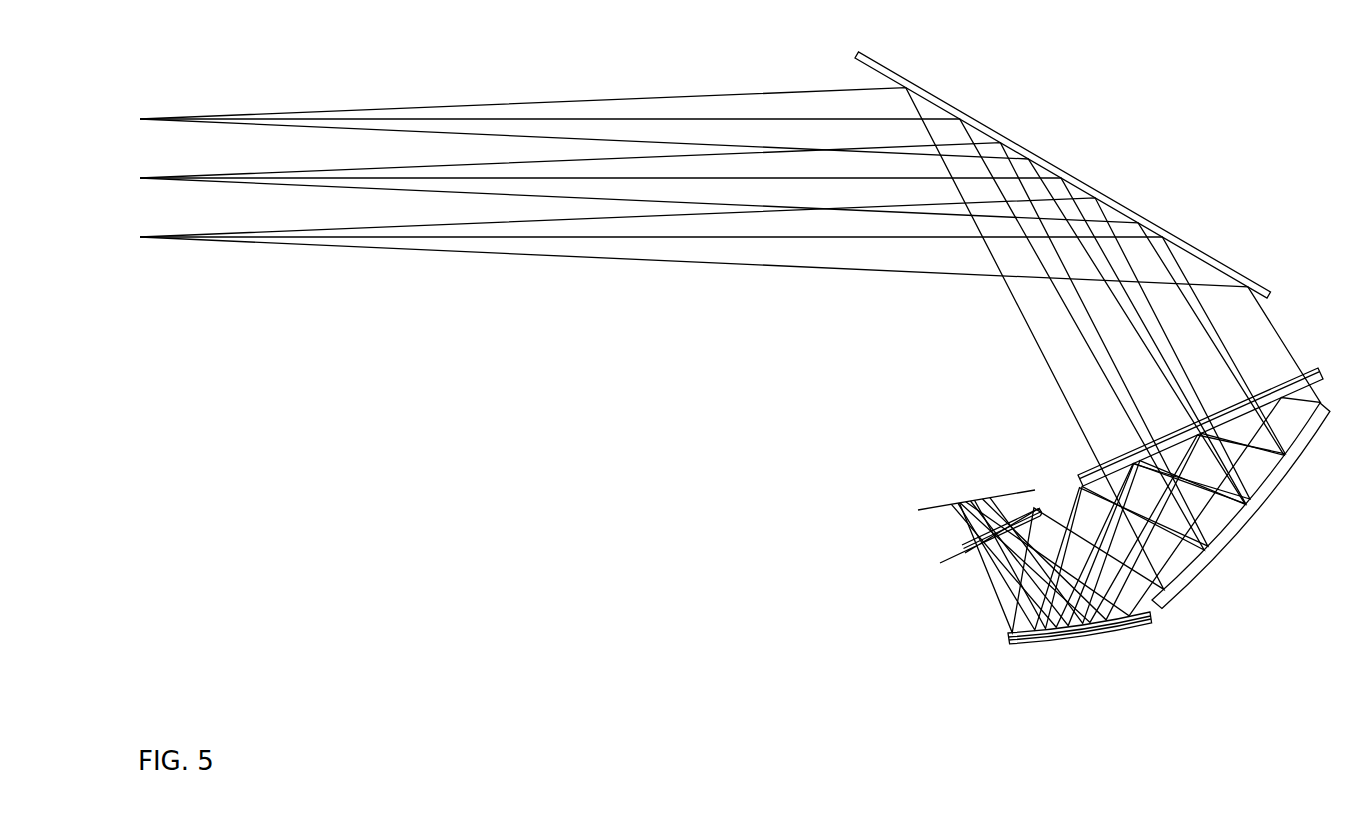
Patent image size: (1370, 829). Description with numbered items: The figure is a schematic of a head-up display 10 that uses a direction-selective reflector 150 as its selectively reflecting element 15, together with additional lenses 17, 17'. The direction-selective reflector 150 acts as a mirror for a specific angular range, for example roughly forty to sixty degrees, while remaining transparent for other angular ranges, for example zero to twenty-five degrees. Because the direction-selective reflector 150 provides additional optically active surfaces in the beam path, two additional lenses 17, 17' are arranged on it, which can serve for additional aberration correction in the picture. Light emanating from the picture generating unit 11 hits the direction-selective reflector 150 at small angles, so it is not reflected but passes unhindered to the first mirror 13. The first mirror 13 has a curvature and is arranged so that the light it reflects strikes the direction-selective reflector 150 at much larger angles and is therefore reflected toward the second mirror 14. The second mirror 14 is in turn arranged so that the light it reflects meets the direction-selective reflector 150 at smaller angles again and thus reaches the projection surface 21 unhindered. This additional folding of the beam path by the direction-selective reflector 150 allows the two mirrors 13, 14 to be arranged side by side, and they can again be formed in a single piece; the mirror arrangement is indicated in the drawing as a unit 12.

The head-up display 10 is at (687, 405).
The picture generating unit 11 is at (933, 507).
The first optical unit 12 is at (1163, 633).
The first mirror 13 is at (1020, 643).
The second mirror 14 is at (1246, 534).
The selectively reflecting element 15 is at (1037, 459).
The additional lens 17 is at (948, 528).
The additional lens 17' is at (1222, 386).
The projection surface 21 is at (1069, 174).
The direction-selective reflector 150 is at (955, 557).